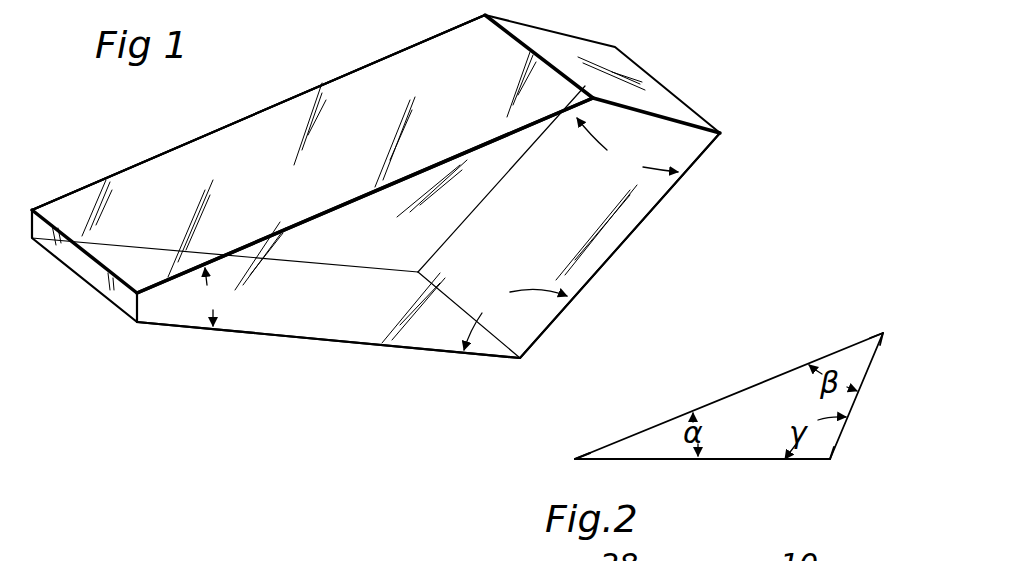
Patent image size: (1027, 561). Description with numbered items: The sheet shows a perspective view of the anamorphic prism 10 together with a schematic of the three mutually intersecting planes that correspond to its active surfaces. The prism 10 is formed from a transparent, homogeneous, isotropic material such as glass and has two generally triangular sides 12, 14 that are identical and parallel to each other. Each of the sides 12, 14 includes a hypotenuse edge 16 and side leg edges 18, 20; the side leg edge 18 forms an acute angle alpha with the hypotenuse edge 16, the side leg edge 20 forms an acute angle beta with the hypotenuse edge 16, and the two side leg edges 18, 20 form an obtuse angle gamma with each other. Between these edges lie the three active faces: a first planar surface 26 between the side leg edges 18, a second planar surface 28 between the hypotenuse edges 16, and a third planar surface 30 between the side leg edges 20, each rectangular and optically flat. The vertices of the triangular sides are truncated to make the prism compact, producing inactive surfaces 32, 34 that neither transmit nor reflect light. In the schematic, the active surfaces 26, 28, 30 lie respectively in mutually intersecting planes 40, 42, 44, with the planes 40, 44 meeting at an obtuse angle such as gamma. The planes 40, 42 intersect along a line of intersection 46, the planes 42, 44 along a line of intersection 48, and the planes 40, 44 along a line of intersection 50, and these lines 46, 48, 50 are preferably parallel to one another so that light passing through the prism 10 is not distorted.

In FIG. 1, the anamorphic prism 10 is at (706, 56).
In FIG. 1, the triangular side 12 is at (407, 322).
In FIG. 1, the triangular side 14 is at (300, 88).
In FIG. 1, the hypotenuse edge 16 is at (402, 47).
In FIG. 1, the side leg edge 18 is at (305, 263).
In FIG. 1, the side leg edge 20 is at (515, 159).
In FIG. 1, the first planar surface 26 is at (262, 318).
In FIG. 1, the second planar surface 28 is at (368, 166).
In FIG. 1, the third planar surface 30 is at (618, 220).
In FIG. 1, the truncation surface 32 is at (673, 95).
In FIG. 1, the truncation surface 34 is at (95, 278).
In FIG. 2, the plane 40 is at (722, 460).
In FIG. 2, the plane 42 is at (722, 399).
In FIG. 2, the plane 44 is at (855, 405).
In FIG. 2, the line of intersection 46 is at (575, 458).
In FIG. 2, the line of intersection 48 is at (885, 333).
In FIG. 2, the line of intersection 50 is at (833, 463).